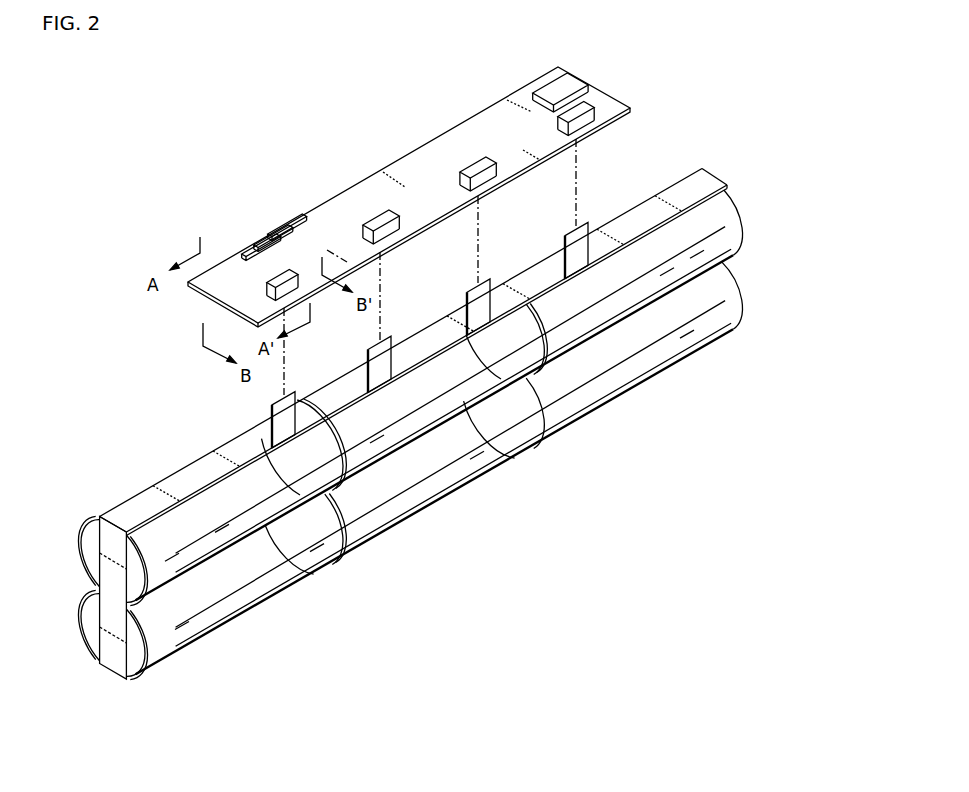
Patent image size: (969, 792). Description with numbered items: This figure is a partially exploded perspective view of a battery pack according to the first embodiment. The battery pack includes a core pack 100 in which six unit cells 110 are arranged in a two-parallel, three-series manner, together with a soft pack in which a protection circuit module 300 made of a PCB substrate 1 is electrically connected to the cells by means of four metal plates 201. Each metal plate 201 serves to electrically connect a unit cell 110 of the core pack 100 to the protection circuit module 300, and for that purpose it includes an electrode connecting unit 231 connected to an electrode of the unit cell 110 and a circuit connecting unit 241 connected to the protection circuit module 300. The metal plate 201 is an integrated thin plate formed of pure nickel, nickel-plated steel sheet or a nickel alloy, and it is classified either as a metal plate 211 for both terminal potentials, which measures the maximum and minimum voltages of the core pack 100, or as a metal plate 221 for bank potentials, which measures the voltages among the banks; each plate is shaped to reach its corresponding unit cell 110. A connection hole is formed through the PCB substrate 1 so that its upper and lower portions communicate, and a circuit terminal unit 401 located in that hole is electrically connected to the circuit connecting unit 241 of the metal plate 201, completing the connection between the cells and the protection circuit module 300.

The PCB substrate 1 is at (400, 198).
The core pack 100 is at (395, 424).
The unit cell 110 is at (262, 572).
The metal plate 201 is at (387, 424).
The metal plate for both terminal potentials 211 is at (595, 262).
The metal plate for bank potentials 221 is at (497, 330).
The electrode connecting unit 231 is at (110, 582).
The circuit connecting unit 241 is at (273, 413).
The protection circuit module 300 is at (409, 197).
The circuit terminal unit 401 is at (366, 226).